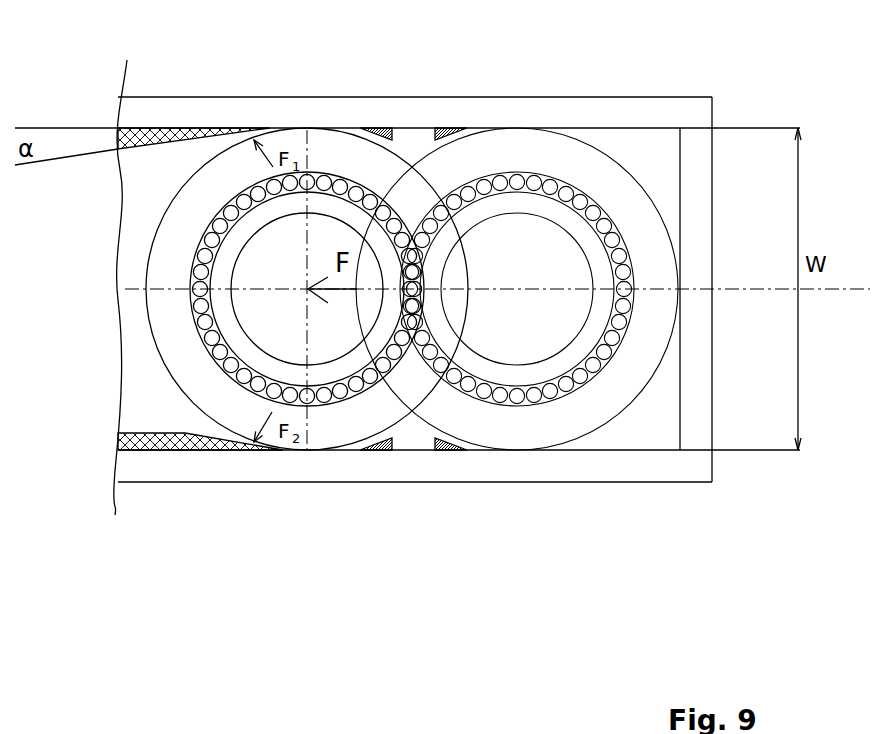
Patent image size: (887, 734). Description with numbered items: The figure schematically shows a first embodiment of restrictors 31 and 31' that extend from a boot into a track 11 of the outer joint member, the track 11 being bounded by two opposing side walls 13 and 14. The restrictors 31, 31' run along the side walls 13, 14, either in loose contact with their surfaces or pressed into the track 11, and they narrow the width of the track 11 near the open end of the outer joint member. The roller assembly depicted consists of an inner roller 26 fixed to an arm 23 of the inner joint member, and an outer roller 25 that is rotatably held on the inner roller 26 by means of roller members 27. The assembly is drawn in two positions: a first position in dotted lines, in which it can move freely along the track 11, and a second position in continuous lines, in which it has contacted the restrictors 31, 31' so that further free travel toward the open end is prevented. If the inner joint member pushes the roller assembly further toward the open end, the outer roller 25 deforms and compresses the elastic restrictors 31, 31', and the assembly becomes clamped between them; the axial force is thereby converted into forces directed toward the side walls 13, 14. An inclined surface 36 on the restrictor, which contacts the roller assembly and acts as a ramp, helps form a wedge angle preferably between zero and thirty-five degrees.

The track 11 is at (650, 147).
The side wall 13 is at (608, 128).
The side wall 14 is at (612, 452).
The arm 23 is at (322, 342).
The outer roller 25 is at (333, 148).
The inner roller 26 is at (223, 328).
The roller members 27 is at (230, 223).
The restrictor 31 is at (194, 90).
The restrictor 31' is at (200, 414).
The inclined surface 36 is at (198, 152).